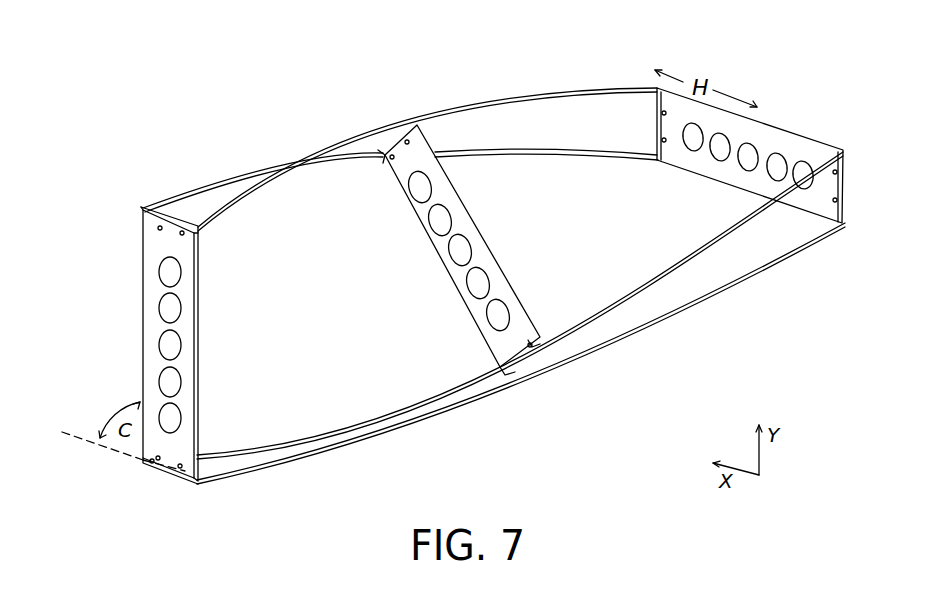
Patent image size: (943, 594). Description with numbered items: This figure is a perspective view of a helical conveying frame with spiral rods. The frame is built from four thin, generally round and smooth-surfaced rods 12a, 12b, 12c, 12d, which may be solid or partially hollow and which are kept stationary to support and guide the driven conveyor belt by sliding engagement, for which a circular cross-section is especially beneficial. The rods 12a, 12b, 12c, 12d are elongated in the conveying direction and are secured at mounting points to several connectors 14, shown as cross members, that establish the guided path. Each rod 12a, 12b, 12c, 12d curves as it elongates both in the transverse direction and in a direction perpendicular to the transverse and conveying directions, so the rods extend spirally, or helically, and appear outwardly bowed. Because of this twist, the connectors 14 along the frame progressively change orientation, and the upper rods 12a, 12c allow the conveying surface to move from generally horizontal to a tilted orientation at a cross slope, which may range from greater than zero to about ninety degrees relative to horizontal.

The rod 12a is at (588, 86).
The rod 12b is at (518, 151).
The rod 12c is at (699, 243).
The rod 12d is at (753, 280).
The connector 14 is at (206, 333).